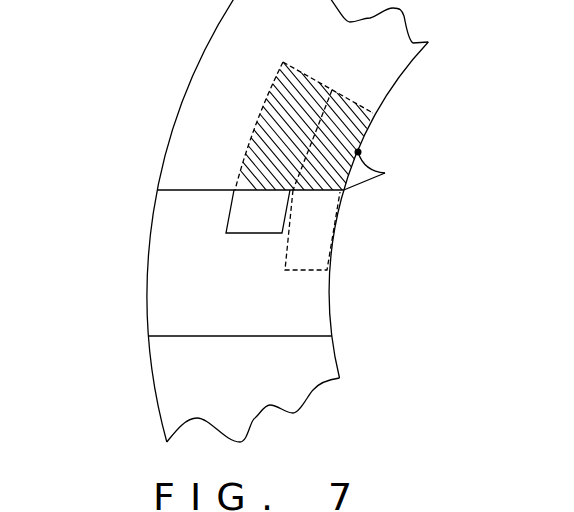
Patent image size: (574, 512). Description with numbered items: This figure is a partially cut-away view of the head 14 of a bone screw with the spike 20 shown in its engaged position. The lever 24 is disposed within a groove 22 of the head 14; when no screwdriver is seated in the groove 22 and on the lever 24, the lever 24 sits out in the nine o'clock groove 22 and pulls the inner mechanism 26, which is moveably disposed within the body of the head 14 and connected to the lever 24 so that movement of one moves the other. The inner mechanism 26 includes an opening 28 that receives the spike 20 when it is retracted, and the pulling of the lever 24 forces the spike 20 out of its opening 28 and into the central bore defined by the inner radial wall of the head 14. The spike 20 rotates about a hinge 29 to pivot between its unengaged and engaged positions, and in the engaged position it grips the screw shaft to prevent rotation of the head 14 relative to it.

The head 14 is at (120, 380).
The spike 20 is at (383, 176).
The groove 22 is at (187, 285).
The lever 24 is at (230, 222).
The inner mechanism 26 is at (288, 117).
The opening 28 is at (310, 270).
The hinge 29 is at (361, 150).